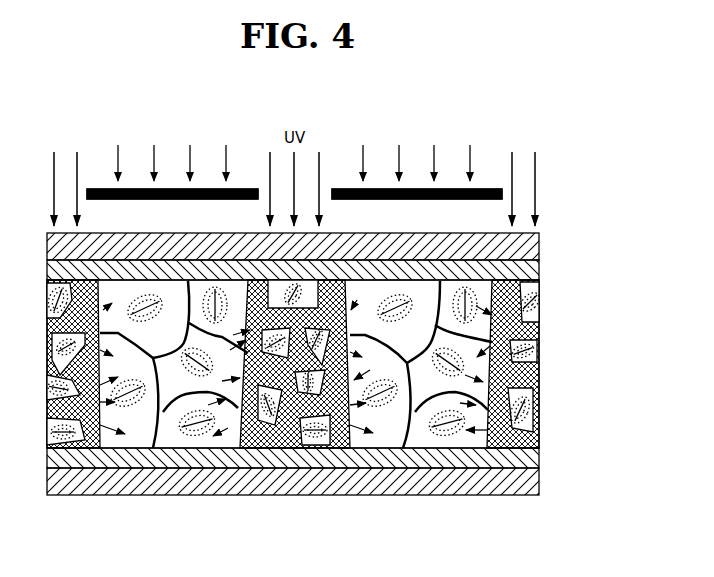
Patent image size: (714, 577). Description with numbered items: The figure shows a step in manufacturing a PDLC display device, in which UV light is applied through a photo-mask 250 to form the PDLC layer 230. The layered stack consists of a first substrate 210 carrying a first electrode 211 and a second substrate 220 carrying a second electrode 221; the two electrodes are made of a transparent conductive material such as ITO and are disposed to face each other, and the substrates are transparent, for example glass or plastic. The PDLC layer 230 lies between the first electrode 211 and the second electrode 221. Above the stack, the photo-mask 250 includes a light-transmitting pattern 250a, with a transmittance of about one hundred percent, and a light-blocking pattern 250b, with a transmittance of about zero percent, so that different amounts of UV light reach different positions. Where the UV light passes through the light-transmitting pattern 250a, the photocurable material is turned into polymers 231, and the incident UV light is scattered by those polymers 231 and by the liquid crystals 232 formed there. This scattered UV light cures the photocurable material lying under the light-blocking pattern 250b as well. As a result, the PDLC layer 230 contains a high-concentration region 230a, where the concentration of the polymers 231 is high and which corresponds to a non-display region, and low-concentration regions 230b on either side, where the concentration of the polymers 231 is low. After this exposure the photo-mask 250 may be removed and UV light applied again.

The first substrate 210 is at (541, 481).
The first electrode 211 is at (541, 458).
The second substrate 220 is at (541, 248).
The second electrode 221 is at (541, 270).
The PDLC layer 230 is at (548, 281).
The high-concentration region 230a is at (350, 448).
The low-concentration region 230b is at (102, 448).
The polymers 231 is at (503, 448).
The liquid crystals 232 is at (77, 447).
The photo-mask 250 is at (427, 108).
The light-transmitting pattern 250a is at (328, 196).
The light-blocking pattern 250b is at (420, 189).